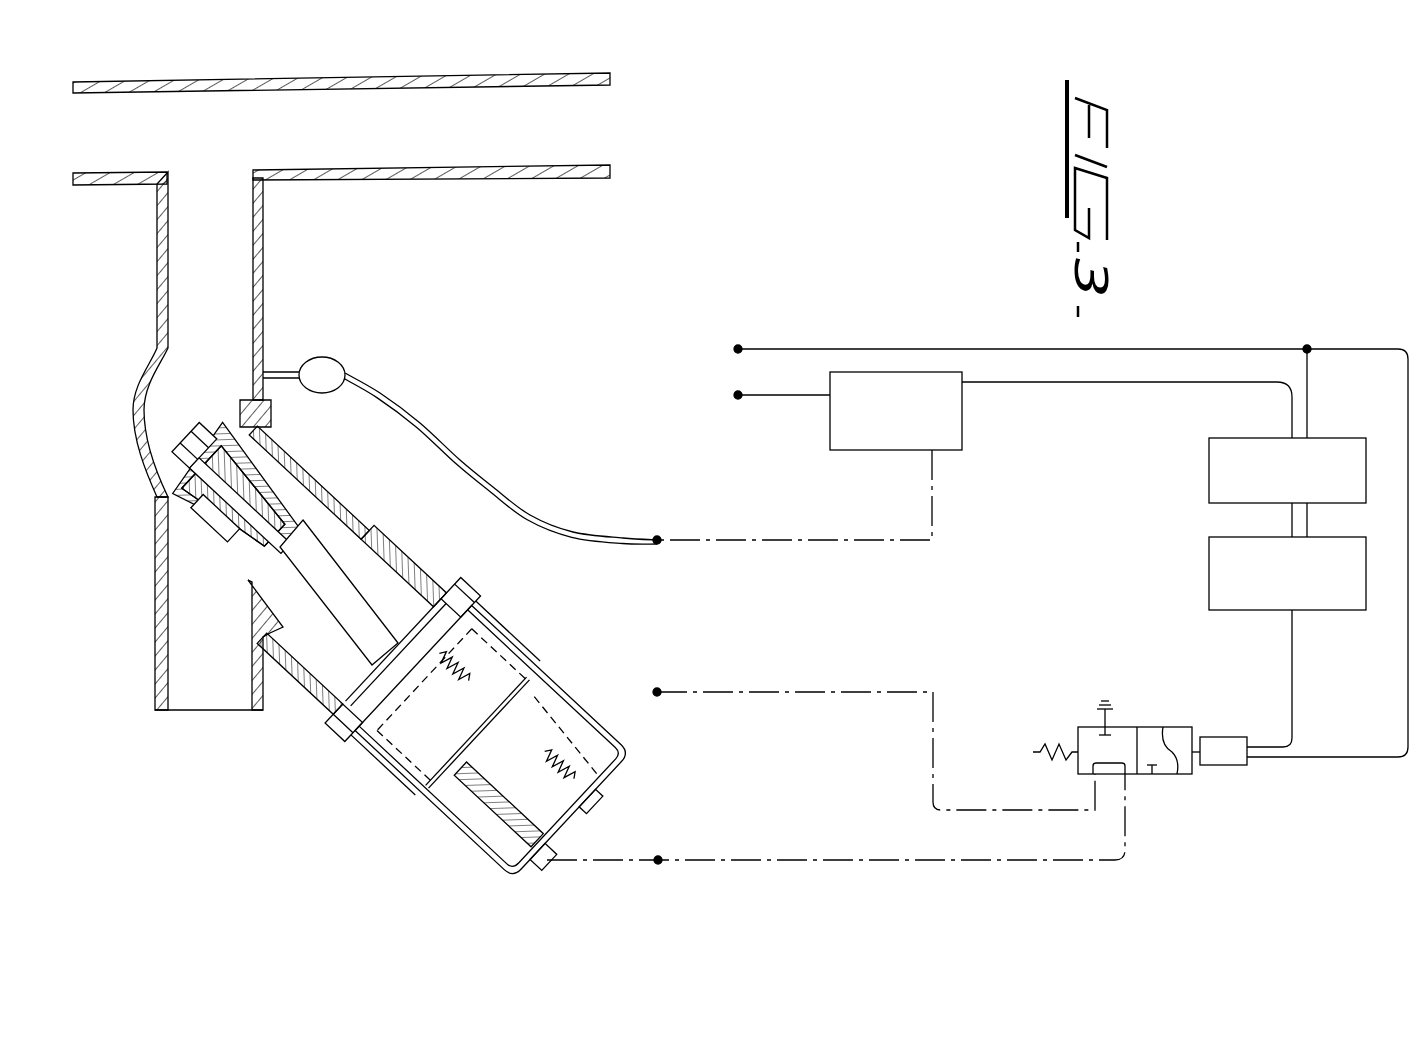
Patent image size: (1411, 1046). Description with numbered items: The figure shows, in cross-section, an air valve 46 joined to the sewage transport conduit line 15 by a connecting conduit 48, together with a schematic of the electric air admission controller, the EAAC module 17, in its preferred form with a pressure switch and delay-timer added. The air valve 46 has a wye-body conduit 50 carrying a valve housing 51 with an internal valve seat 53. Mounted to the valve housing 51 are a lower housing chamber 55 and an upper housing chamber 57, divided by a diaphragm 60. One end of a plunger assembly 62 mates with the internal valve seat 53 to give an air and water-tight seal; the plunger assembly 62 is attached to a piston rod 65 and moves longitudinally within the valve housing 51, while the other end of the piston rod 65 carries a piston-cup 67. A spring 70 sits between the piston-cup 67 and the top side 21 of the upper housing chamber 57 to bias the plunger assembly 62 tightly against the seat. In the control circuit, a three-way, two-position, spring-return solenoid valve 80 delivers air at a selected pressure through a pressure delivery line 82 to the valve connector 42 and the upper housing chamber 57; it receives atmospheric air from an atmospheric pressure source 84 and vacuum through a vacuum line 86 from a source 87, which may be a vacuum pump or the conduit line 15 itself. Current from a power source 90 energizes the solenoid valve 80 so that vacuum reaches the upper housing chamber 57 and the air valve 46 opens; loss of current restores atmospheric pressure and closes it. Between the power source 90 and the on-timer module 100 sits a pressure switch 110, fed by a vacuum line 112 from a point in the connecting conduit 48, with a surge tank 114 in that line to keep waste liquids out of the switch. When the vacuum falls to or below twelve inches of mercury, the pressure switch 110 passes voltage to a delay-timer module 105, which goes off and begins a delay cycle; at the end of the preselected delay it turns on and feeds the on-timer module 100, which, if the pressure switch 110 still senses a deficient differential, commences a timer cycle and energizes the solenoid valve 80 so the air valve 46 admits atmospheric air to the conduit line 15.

The sewage transport conduit 15 is at (157, 81).
The EAAC module 17 is at (1305, 770).
The top side of upper housing chamber 21 is at (588, 799).
The valve connector 42 is at (503, 792).
The air valve 46 is at (157, 553).
The connecting conduit 48 is at (263, 307).
The wye-body conduit 50 is at (135, 411).
The valve housing 51 is at (311, 463).
The internal valve seat 53 is at (233, 420).
The lower housing chamber 55 is at (343, 733).
The upper housing chamber 57 is at (453, 827).
The diaphragm 60 is at (534, 657).
The plunger assembly 62 is at (217, 516).
The piston rod 65 is at (260, 512).
The piston-cup 67 is at (533, 680).
The spring 70 is at (446, 652).
The solenoid valve 80 is at (1167, 776).
The pressure delivery line 82 is at (907, 860).
The atmospheric pressure source 84 is at (1108, 637).
The vacuum line 86 is at (810, 690).
The source of vacuum or subatmospheric pressure 87 is at (657, 689).
The power source 90 is at (981, 373).
The on-timer module 100 is at (1209, 577).
The delay-timer module 105 is at (1209, 477).
The pressure switch 110 is at (963, 438).
The vacuum line 112 is at (815, 539).
The surge tank 114 is at (320, 357).